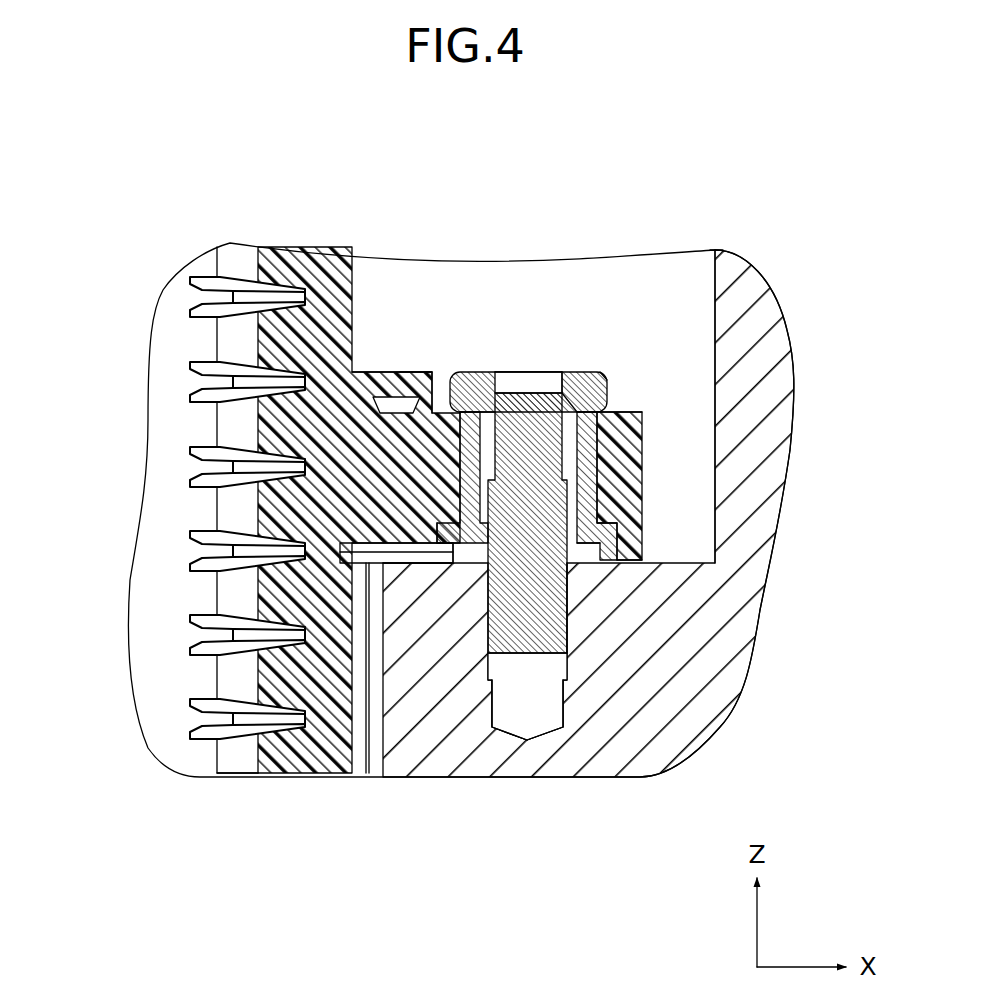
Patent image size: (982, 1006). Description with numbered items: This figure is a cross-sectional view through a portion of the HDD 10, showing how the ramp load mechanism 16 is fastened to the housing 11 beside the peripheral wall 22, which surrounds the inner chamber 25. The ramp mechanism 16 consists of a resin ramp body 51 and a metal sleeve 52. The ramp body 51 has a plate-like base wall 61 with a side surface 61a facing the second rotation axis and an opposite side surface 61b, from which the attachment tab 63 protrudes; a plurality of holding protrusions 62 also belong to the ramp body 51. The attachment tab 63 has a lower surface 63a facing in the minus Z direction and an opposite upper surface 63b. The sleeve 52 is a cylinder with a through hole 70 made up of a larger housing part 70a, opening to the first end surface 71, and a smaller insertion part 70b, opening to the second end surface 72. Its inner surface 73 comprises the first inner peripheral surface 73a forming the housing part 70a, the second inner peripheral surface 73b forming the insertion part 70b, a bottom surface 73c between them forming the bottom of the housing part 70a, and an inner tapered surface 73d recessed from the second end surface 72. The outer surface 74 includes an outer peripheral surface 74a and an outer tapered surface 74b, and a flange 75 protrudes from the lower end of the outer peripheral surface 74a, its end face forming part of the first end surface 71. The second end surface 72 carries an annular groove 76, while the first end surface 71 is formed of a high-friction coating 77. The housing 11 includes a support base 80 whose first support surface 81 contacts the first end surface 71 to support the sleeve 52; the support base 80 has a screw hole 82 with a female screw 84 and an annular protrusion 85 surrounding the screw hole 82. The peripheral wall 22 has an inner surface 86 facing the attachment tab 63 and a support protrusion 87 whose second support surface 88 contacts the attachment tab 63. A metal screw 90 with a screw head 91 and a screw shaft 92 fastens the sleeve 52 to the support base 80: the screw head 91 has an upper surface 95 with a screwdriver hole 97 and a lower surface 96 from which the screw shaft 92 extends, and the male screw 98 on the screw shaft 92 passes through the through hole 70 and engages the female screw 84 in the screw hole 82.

The HDD 10 is at (226, 170).
The housing 11 is at (617, 508).
The ramp load mechanism 16 is at (322, 246).
The peripheral wall 22 is at (780, 402).
The inner chamber 25 is at (628, 275).
The ramp body 51 is at (318, 515).
The sleeve 52 is at (724, 459).
The base wall 61 is at (318, 515).
The side surface 61a is at (238, 772).
The side surface 61b is at (362, 745).
The holding protrusions 62 is at (208, 274).
The attachment tab 63 is at (724, 459).
The lower surface 63a is at (398, 565).
The upper surface 63b is at (408, 372).
The through hole 70 is at (574, 508).
The housing part 70a is at (630, 707).
The insertion part 70b is at (574, 508).
The first end surface 71 is at (433, 691).
The second end surface 72 is at (470, 412).
The inner surface 73 is at (528, 285).
The first inner peripheral surface 73a is at (597, 563).
The second inner peripheral surface 73b is at (518, 372).
The bottom surface 73c is at (642, 550).
The inner tapered surface 73d is at (490, 372).
The outer surface 74 is at (462, 524).
The outer peripheral surface 74a is at (462, 524).
The outer tapered surface 74b is at (440, 372).
The flange 75 is at (440, 528).
The groove 76 is at (607, 372).
The coating 77 is at (452, 565).
The support base 80 is at (759, 569).
The first support surface 81 is at (692, 560).
The screw hole 82 is at (575, 600).
The female screw 84 is at (555, 700).
The protrusion 85 is at (437, 552).
The inner surface 86 is at (722, 250).
The support protrusion 87 is at (381, 291).
The second support surface 88 is at (388, 372).
The screw 90 is at (507, 632).
The screw head 91 is at (572, 372).
The screw shaft 92 is at (515, 653).
The upper surface 95 is at (560, 372).
The lower surface 96 is at (607, 427).
The hole 97 is at (530, 368).
The male screw 98 is at (585, 640).